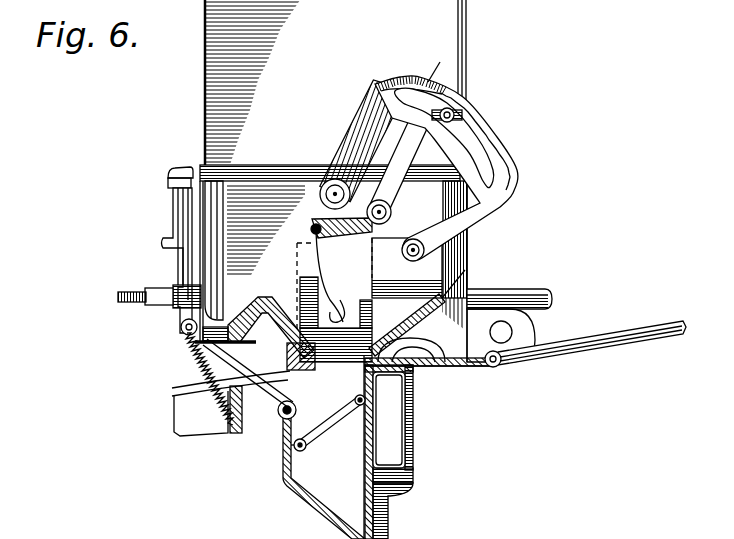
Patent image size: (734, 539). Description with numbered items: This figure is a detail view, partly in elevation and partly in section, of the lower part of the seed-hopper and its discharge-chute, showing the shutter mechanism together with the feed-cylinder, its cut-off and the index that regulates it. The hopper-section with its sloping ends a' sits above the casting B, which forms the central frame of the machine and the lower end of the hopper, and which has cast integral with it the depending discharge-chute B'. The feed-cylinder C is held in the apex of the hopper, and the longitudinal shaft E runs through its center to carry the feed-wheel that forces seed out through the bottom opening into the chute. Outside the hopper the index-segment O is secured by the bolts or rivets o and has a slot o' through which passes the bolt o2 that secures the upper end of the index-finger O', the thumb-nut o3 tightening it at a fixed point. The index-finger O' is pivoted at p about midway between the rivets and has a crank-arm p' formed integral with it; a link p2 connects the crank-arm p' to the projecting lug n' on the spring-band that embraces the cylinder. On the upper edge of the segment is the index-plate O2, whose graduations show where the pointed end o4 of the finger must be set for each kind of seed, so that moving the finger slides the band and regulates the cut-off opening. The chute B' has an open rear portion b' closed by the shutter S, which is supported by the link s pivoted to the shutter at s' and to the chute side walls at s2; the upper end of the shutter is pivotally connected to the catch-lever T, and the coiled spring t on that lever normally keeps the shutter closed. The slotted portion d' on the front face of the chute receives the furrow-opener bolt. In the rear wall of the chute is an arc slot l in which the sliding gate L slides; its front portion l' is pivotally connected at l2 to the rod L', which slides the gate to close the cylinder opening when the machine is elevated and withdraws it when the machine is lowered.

The index-plate O2 is at (438, 61).
The pointed end of the index-finger o4 is at (455, 100).
The bolt o2 is at (462, 100).
The thumb-nut o3 is at (454, 116).
The slot o' is at (501, 127).
The index-segment O is at (460, 168).
The index-finger O' is at (406, 159).
The pivot of the index-finger p is at (395, 211).
The bolts or rivets o is at (395, 171).
The crank-arm p' is at (321, 224).
The link p2 is at (303, 244).
The projecting lug n' is at (305, 277).
The feed-cylinder C is at (350, 330).
The catch-lever T is at (172, 215).
The coiled spring t is at (193, 357).
The casting forming the central frame B is at (177, 394).
The open rear portion of the chute b' is at (248, 407).
The shutter S is at (293, 492).
The pivot of link to chute s2 is at (358, 400).
The pivot of link to shutter s' is at (307, 422).
The link s is at (326, 430).
The slotted portion d' is at (418, 420).
The discharge-chute B' is at (419, 447).
The arc slot l is at (429, 379).
The front portion of the gate l' is at (429, 386).
The sliding gate L is at (494, 378).
The pivotal connection l2 is at (508, 353).
The rod L' is at (592, 353).
The longitudinal shaft E is at (543, 292).
The sloping ends of the hopper a' is at (407, 325).